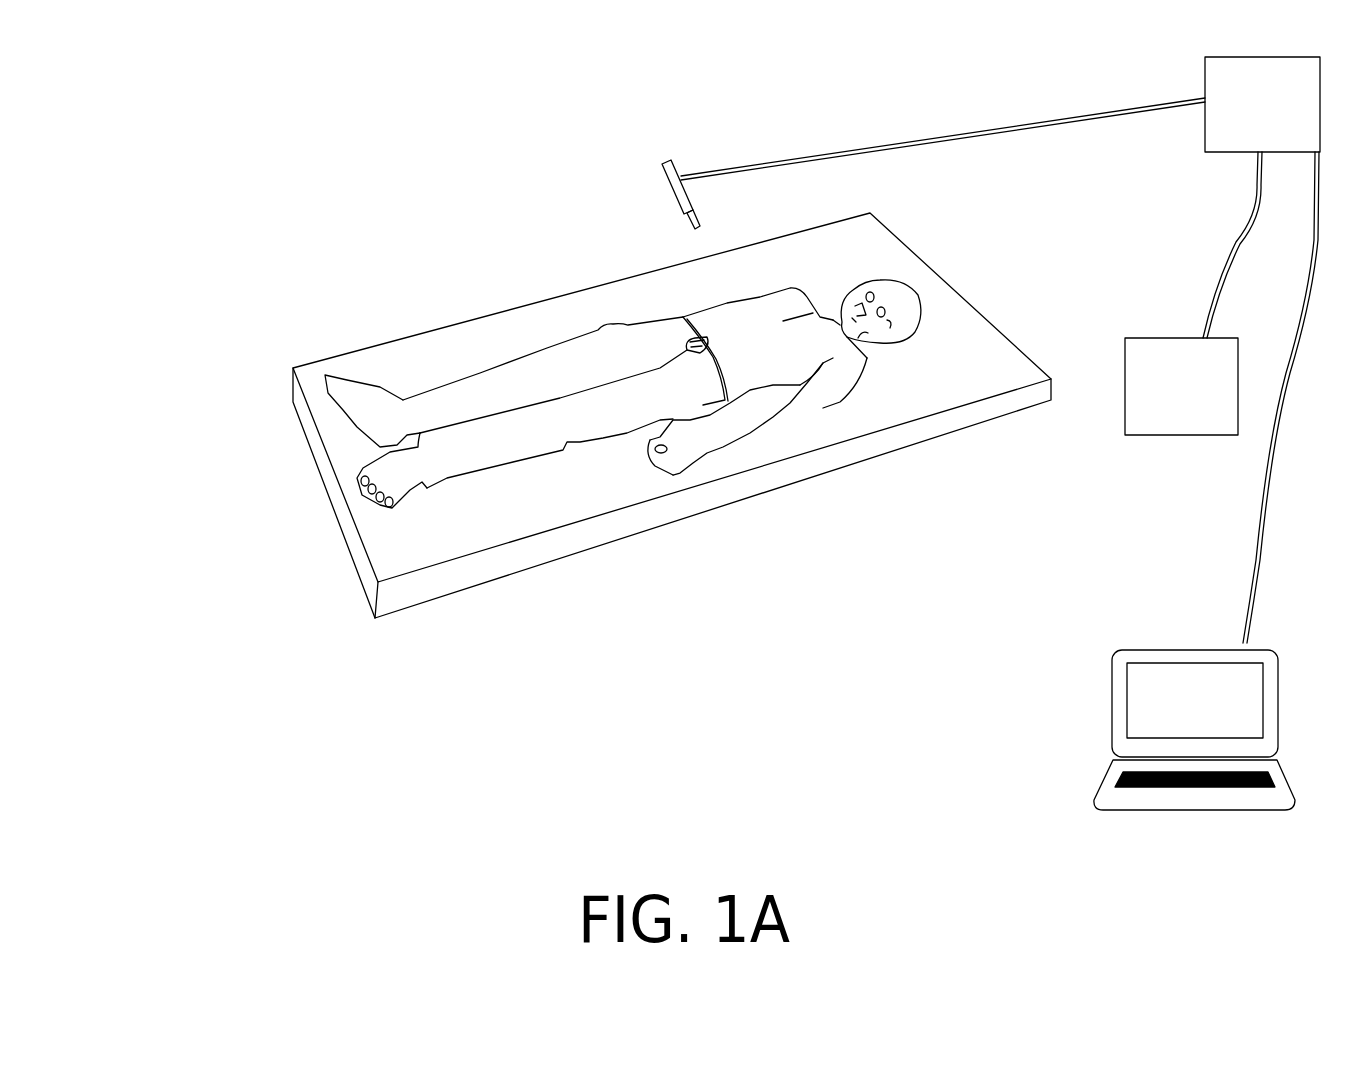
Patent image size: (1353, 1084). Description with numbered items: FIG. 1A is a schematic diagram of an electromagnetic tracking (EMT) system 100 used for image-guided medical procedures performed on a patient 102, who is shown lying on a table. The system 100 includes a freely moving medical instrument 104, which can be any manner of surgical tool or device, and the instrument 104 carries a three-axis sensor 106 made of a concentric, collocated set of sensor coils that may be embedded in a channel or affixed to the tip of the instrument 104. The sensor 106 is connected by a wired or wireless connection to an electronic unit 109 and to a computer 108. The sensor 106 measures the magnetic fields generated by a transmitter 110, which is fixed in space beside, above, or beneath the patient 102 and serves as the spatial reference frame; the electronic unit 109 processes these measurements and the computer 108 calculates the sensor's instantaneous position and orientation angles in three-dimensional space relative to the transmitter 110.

The EMT system 100 is at (188, 149).
The patient 102 is at (825, 358).
The medical instrument 104 is at (675, 162).
The three-axis sensor 106 is at (698, 220).
The computer 108 is at (1158, 648).
The electronic unit 109 is at (1288, 98).
The transmitter 110 is at (1208, 381).